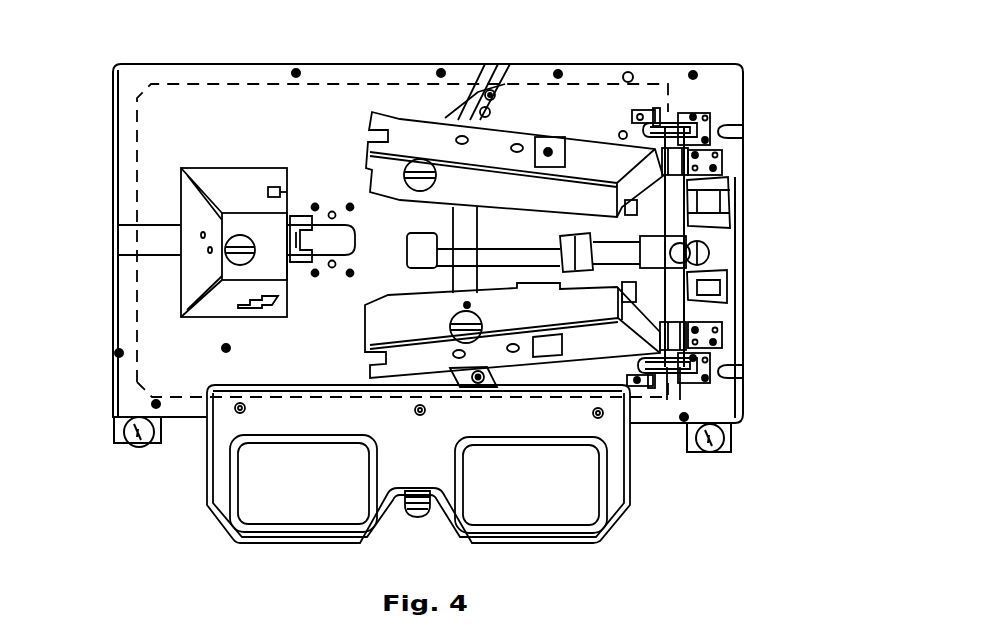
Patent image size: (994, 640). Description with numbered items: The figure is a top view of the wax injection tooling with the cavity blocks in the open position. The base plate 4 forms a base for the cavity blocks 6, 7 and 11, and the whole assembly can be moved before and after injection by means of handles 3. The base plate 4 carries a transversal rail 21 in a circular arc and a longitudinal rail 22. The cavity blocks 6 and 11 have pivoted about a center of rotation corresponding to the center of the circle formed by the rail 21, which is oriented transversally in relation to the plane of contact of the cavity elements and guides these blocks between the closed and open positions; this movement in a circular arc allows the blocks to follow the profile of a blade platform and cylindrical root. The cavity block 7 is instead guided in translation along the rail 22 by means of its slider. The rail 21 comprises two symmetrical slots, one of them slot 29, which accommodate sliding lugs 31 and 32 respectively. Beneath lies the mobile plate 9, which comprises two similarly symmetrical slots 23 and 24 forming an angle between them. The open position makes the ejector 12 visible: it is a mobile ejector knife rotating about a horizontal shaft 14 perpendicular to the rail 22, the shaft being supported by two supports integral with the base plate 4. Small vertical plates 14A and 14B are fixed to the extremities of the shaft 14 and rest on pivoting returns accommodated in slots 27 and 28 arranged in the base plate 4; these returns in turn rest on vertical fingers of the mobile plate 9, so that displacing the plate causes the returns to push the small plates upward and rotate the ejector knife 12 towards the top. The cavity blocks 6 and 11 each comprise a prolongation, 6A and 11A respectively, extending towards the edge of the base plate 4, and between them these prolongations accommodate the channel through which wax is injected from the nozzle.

The handle 3 is at (635, 495).
The base plate 4 is at (235, 72).
The cavity block 6 is at (578, 343).
The prolongation 6A is at (710, 285).
The cavity block 7 is at (190, 285).
The mobile plate 9 is at (155, 183).
The cavity block 11 is at (400, 118).
The prolongation 11A is at (715, 193).
The ejector 12 is at (660, 268).
The horizontal shaft 14 is at (688, 232).
The small vertical plate 14A is at (680, 380).
The small vertical plate 14B is at (683, 120).
The rail 21 is at (488, 72).
The rail 22 is at (125, 243).
The slot 23 is at (450, 368).
The slot 24 is at (458, 117).
The slot 27 is at (718, 372).
The slot 28 is at (720, 130).
The slot 29 is at (510, 83).
The sliding lug 31 is at (500, 107).
The sliding lug 32 is at (480, 384).